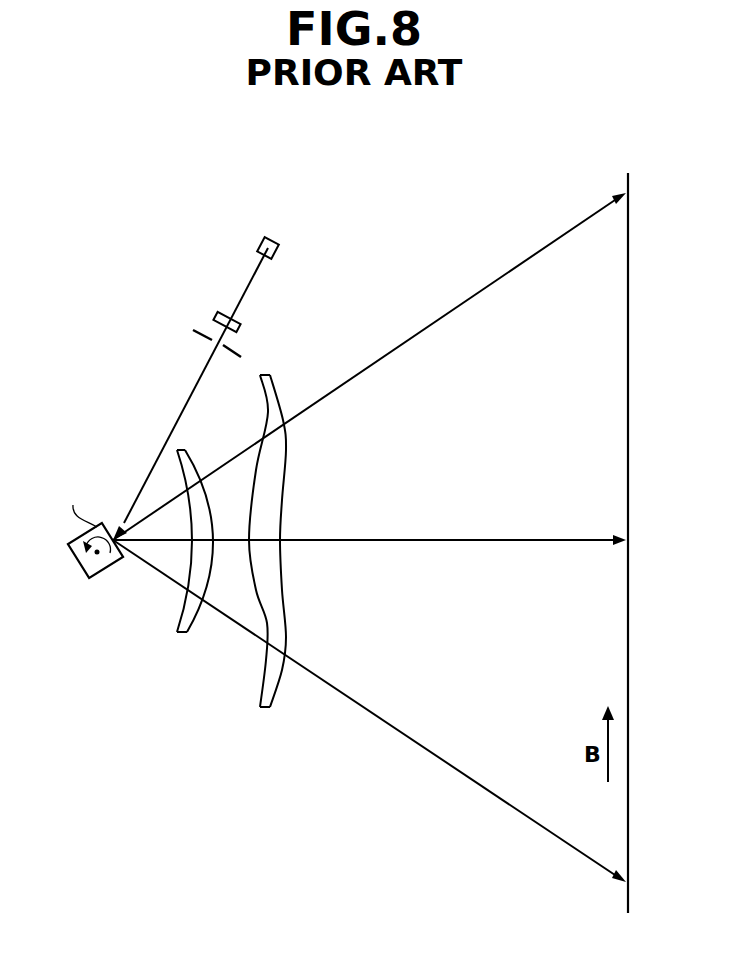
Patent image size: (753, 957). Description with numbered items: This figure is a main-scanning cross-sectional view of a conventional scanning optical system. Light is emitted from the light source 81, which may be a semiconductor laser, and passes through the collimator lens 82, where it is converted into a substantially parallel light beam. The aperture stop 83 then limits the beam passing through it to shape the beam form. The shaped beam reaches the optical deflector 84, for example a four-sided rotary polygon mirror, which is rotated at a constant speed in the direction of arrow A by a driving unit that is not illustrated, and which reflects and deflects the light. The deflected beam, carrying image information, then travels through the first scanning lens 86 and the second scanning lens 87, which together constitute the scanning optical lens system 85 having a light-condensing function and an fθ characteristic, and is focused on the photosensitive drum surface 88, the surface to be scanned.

The light source 81 is at (258, 242).
The collimator lens 82 is at (212, 315).
The aperture stop 83 is at (200, 336).
The optical deflector 84 is at (71, 572).
The scanning optical lens system 85 is at (240, 782).
The first scanning lens 86 is at (177, 637).
The second scanning lens 87 is at (260, 708).
The photosensitive drum surface 88 is at (630, 283).